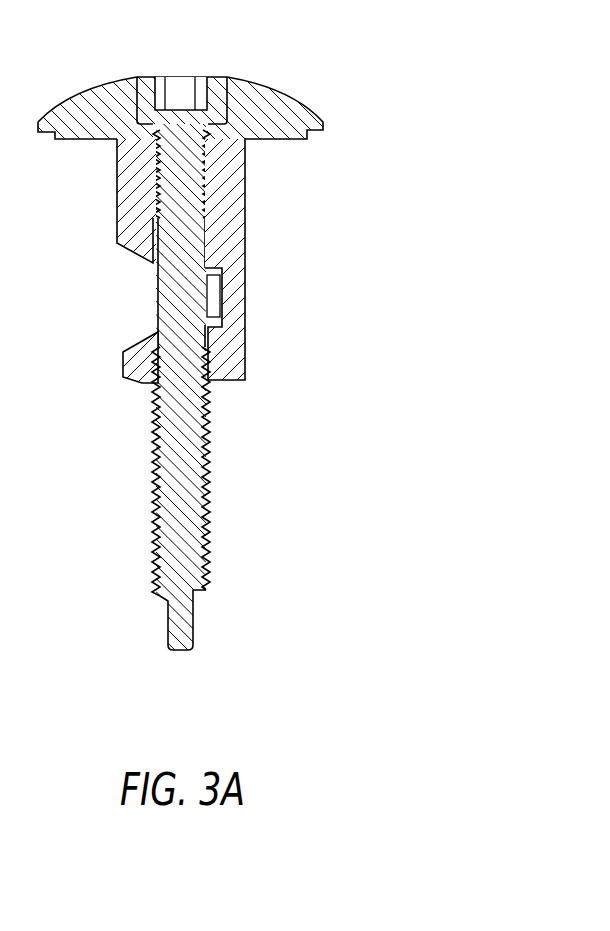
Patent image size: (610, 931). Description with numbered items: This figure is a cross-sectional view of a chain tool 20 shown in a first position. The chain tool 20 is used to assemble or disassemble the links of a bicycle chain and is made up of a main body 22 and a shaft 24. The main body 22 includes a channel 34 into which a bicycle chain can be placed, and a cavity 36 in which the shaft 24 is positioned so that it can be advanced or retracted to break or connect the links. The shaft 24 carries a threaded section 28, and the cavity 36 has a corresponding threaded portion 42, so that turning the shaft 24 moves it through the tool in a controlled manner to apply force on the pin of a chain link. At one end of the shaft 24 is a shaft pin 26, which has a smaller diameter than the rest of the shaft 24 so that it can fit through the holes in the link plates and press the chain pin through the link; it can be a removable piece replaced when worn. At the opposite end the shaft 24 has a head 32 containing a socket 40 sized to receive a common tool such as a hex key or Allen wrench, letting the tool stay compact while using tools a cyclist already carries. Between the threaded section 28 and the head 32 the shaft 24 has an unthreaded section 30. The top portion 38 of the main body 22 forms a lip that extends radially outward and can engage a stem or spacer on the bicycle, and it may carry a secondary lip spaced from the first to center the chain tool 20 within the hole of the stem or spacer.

The chain tool 20 is at (378, 147).
The main body 22 is at (243, 160).
The shaft 24 is at (245, 498).
The shaft pin 26 is at (165, 627).
The threaded section 28 is at (210, 432).
The unthreaded section 30 is at (197, 227).
The head 32 is at (217, 80).
The channel 34 is at (222, 292).
The cavity 36 is at (135, 270).
The top portion 38 is at (84, 91).
The socket 40 is at (178, 80).
The threaded portion 42 is at (153, 172).